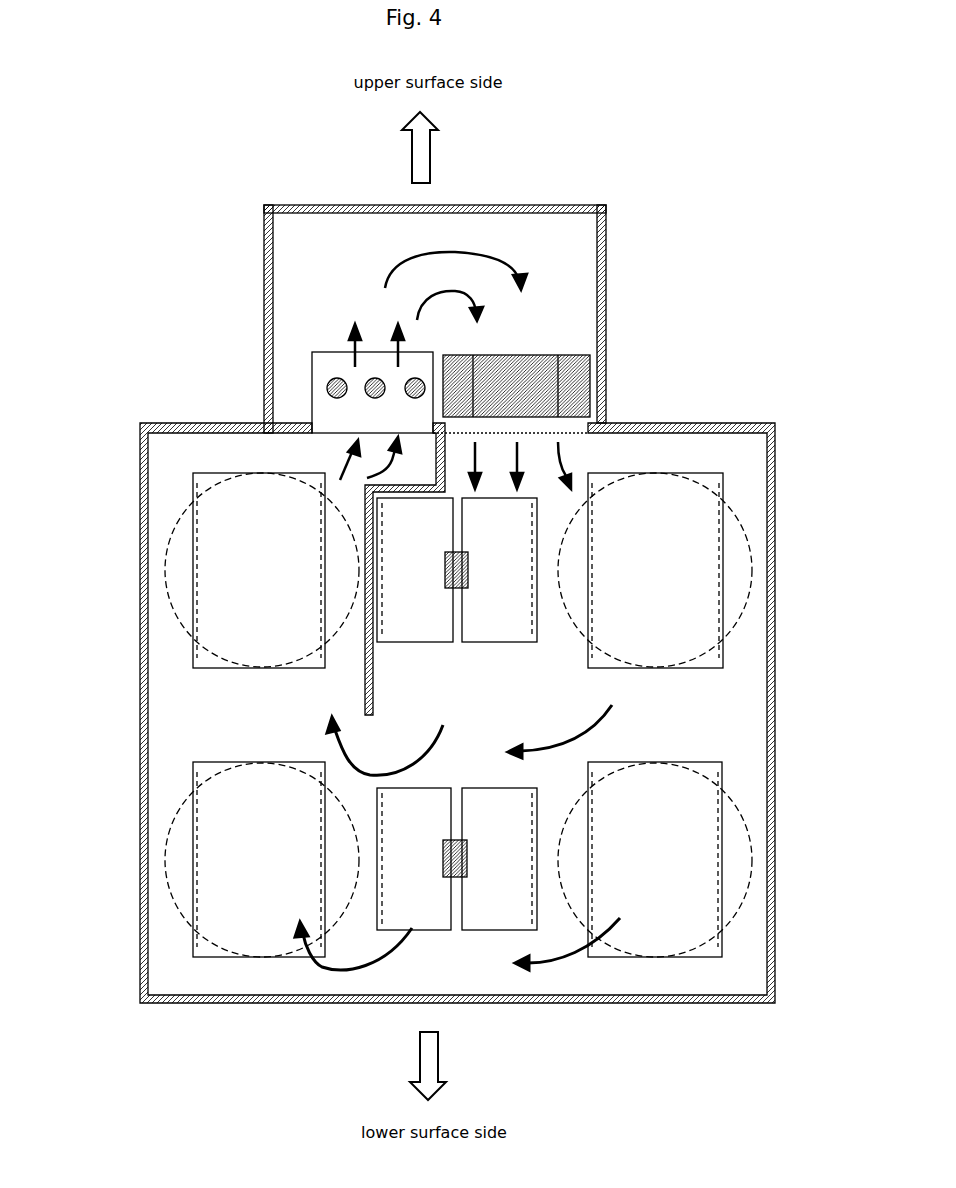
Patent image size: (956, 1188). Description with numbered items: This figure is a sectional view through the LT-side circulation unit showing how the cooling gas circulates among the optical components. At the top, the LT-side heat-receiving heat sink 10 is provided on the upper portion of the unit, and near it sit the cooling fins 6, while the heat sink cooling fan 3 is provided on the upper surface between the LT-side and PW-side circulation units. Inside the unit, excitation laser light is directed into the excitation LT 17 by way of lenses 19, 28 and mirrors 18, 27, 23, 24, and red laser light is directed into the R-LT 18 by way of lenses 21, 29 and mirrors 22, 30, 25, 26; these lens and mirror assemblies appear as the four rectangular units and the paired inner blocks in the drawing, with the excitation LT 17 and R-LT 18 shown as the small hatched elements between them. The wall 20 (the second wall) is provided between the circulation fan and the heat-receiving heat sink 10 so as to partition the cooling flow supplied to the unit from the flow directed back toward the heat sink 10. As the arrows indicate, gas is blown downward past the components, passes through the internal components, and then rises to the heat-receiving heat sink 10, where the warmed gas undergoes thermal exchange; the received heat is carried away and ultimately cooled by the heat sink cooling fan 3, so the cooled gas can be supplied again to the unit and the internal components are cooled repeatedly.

The heat sink cooling fan 3 is at (575, 380).
The cooling fins 6 is at (584, 359).
The LT-side heat-receiving heat sink 10 is at (332, 412).
The excitation LT 17 is at (452, 562).
The mirror 18 is at (202, 473).
The lens 19 is at (172, 543).
The wall 20 is at (370, 663).
The lens 21 is at (163, 868).
The mirror 22 is at (192, 943).
The mirror 23 is at (408, 633).
The mirror 24 is at (518, 637).
The mirror 25 is at (432, 928).
The mirror 26 is at (510, 928).
The mirror 27 is at (697, 472).
The lens 28 is at (742, 528).
The lens 29 is at (732, 805).
The mirror 30 is at (723, 943).